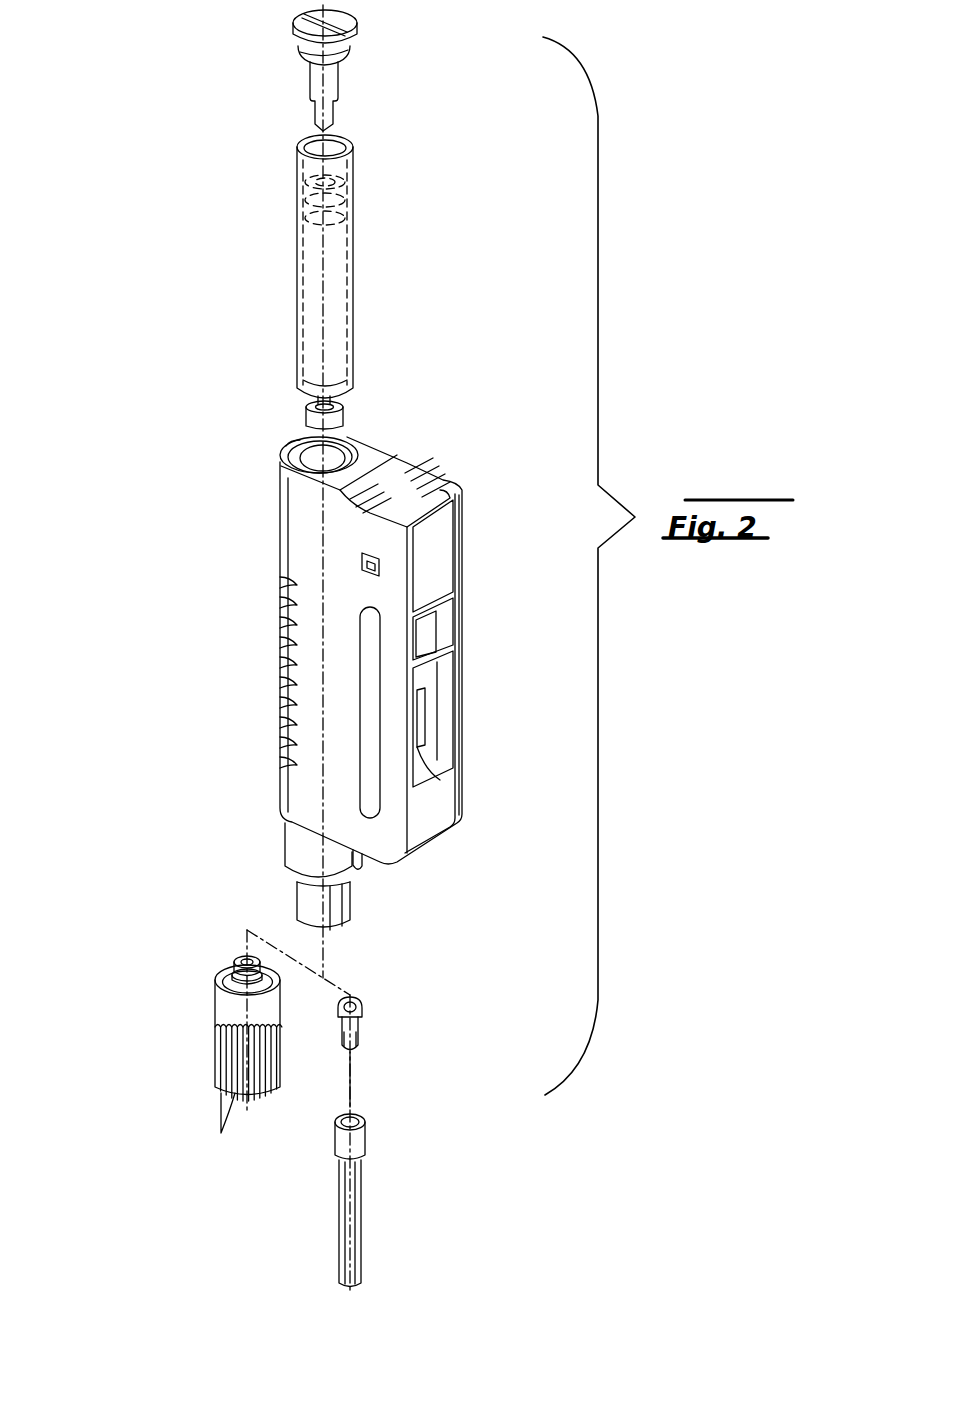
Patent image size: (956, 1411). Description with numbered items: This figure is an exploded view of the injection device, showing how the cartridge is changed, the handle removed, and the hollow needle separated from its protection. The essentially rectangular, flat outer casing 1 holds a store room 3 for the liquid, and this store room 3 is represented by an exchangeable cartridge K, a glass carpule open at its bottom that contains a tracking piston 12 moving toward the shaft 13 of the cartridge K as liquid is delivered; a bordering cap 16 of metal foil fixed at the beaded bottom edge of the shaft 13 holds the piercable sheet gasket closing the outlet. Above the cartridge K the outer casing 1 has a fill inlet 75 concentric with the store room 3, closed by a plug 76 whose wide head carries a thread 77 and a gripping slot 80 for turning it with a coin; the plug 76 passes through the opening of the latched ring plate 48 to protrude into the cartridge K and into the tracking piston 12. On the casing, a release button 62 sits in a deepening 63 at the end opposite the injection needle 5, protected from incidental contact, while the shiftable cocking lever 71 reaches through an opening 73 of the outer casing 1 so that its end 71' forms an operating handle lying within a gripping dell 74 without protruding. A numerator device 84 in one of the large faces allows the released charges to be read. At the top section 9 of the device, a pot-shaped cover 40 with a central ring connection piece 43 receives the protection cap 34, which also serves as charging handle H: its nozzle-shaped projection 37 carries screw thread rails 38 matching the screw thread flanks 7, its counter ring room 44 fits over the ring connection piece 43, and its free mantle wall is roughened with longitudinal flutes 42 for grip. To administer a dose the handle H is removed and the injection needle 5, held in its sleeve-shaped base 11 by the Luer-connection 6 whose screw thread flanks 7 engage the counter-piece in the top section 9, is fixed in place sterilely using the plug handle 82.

The gripping slot 80 is at (292, 20).
The thread 77 is at (350, 50).
The plug 76 is at (312, 78).
The store room 3 is at (298, 312).
The tracking piston 12 is at (298, 205).
The cartridge K is at (297, 345).
The shaft 13 is at (333, 402).
The bordering cap 16 is at (345, 415).
The fill inlet 75 is at (302, 442).
The outer casing 1 is at (297, 558).
The ring plate 48 is at (317, 455).
The numerator device 84 is at (361, 556).
The release button 62 is at (437, 535).
The deepening 63 is at (455, 557).
The shiftable cocking lever 71 is at (481, 620).
The end of the shiftable cocking lever 71' is at (484, 703).
The opening 73 is at (421, 717).
The gripping dell 74 is at (432, 748).
The pot-shaped cover 40 is at (300, 853).
The ring connection piece 43 is at (308, 895).
The top section 9 is at (368, 878).
The charging handle H is at (207, 1068).
The protection cap 34 is at (214, 1078).
The screw thread rails 38 is at (234, 992).
The counter ring room 44 is at (232, 985).
The nozzle-shaped projection 37 is at (240, 964).
The flutes 42 is at (224, 1112).
The screw thread flanks 7 is at (338, 1003).
The Luer-connection 6 is at (360, 1022).
The sleeve-shaped base 11 is at (343, 1035).
The injection needle 5 is at (352, 1077).
The plug handle 82 is at (362, 1198).